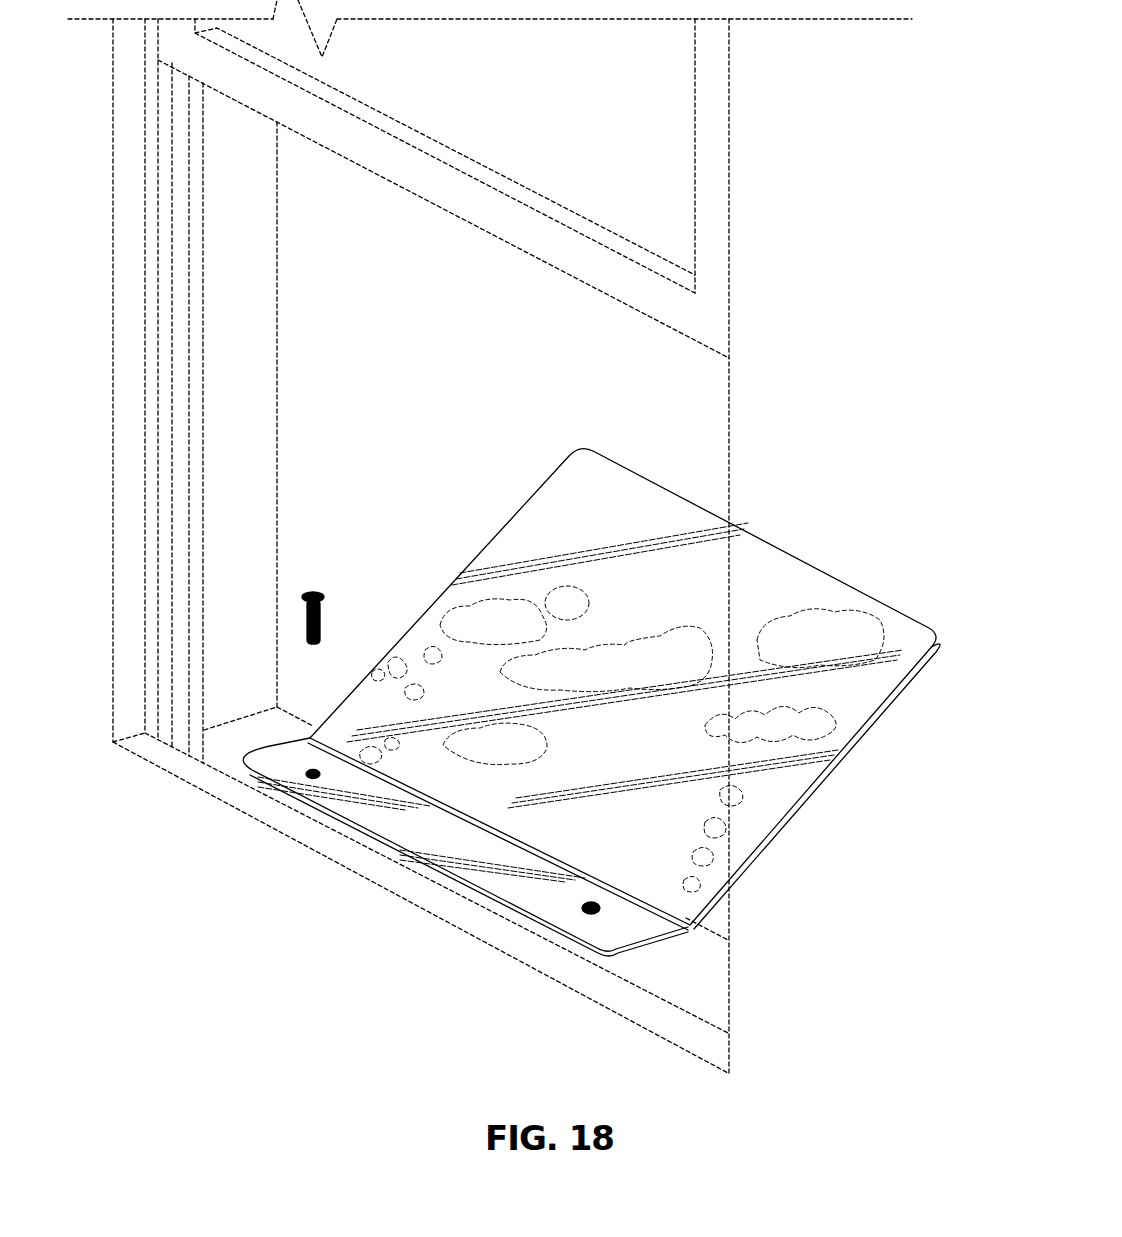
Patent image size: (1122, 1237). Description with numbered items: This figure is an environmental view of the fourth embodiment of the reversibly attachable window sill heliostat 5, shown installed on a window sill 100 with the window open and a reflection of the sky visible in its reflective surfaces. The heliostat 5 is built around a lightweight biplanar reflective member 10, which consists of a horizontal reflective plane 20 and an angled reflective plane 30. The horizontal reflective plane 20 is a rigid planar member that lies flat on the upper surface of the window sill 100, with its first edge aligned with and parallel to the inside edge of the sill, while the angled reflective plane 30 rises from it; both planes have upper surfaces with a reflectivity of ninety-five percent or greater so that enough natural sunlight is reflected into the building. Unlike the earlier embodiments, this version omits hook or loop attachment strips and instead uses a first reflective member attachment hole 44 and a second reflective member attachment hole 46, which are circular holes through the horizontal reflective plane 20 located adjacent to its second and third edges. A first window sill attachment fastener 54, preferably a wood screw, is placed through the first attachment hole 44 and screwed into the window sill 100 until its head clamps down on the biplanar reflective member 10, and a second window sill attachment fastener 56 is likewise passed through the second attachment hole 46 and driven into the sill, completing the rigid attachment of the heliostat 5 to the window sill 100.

The reversibly attachable window sill heliostat 5 is at (526, 536).
The lightweight biplanar reflective member 10 is at (592, 746).
The horizontal reflective plane 20 is at (444, 890).
The angled reflective plane 30 is at (873, 722).
The first reflective member attachment hole 44 is at (307, 776).
The second reflective member attachment hole 46 is at (584, 910).
The second window sill attachment fastener 56 is at (517, 972).
The first window sill attachment fastener 54 is at (313, 590).
The window sill 100 is at (700, 1000).